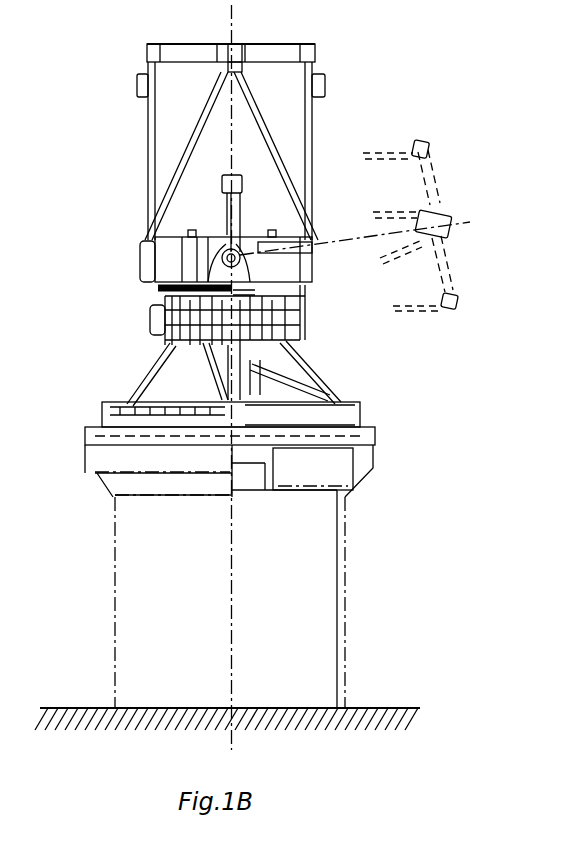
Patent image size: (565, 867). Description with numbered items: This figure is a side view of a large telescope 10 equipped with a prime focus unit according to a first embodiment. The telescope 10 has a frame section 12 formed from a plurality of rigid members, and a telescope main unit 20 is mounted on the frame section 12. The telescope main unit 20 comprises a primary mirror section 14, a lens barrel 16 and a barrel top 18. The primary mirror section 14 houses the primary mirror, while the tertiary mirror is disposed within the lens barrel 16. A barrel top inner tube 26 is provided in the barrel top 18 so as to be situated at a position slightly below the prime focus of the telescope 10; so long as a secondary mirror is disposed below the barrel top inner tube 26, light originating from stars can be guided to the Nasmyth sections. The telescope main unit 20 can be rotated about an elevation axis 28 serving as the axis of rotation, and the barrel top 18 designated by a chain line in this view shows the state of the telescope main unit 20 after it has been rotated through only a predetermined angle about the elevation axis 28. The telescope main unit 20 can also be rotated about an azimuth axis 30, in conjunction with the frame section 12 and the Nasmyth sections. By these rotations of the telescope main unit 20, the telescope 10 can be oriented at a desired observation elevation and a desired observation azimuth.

The large telescope 10 is at (133, 249).
The frame section 12 is at (140, 378).
The primary mirror section 14 is at (152, 321).
The lens barrel 16 is at (160, 268).
The barrel top 18 is at (150, 57).
The telescope main unit 20 is at (314, 125).
The barrel top inner tube 26 is at (236, 45).
The elevation axis 28 is at (247, 243).
The azimuth axis 30 is at (231, 568).